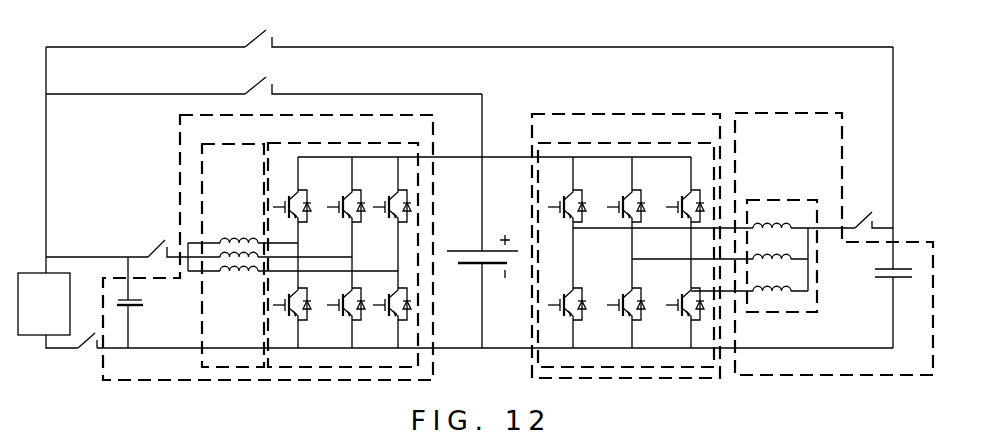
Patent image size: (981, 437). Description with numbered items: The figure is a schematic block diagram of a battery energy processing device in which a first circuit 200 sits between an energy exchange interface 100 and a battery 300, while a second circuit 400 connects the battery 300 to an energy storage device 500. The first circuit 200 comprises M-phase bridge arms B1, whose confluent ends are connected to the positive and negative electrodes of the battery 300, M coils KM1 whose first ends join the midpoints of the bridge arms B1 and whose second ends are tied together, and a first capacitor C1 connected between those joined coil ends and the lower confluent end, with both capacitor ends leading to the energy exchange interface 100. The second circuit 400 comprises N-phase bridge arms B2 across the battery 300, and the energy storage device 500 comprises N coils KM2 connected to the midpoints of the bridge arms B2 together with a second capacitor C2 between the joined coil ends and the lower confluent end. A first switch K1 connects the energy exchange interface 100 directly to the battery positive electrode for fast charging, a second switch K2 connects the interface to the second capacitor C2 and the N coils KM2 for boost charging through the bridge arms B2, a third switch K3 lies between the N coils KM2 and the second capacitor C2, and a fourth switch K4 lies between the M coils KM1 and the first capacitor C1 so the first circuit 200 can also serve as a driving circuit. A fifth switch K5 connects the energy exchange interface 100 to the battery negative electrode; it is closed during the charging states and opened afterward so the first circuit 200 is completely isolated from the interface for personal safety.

The energy exchange interface 100 is at (44, 304).
The first circuit 200 is at (268, 247).
The battery 300 is at (487, 251).
The second circuit 400 is at (642, 246).
The energy storage device 500 is at (834, 244).
The first switch K1 is at (254, 86).
The second switch K2 is at (254, 40).
The third switch K3 is at (864, 221).
The fourth switch K4 is at (156, 249).
The fifth switch K5 is at (89, 340).
The M coils KM1 is at (205, 144).
The N coils KM2 is at (762, 200).
The M-phase bridge arms B1 is at (305, 143).
The N-phase bridge arms B2 is at (668, 143).
The first capacitor C1 is at (136, 299).
The second capacitor C2 is at (880, 279).